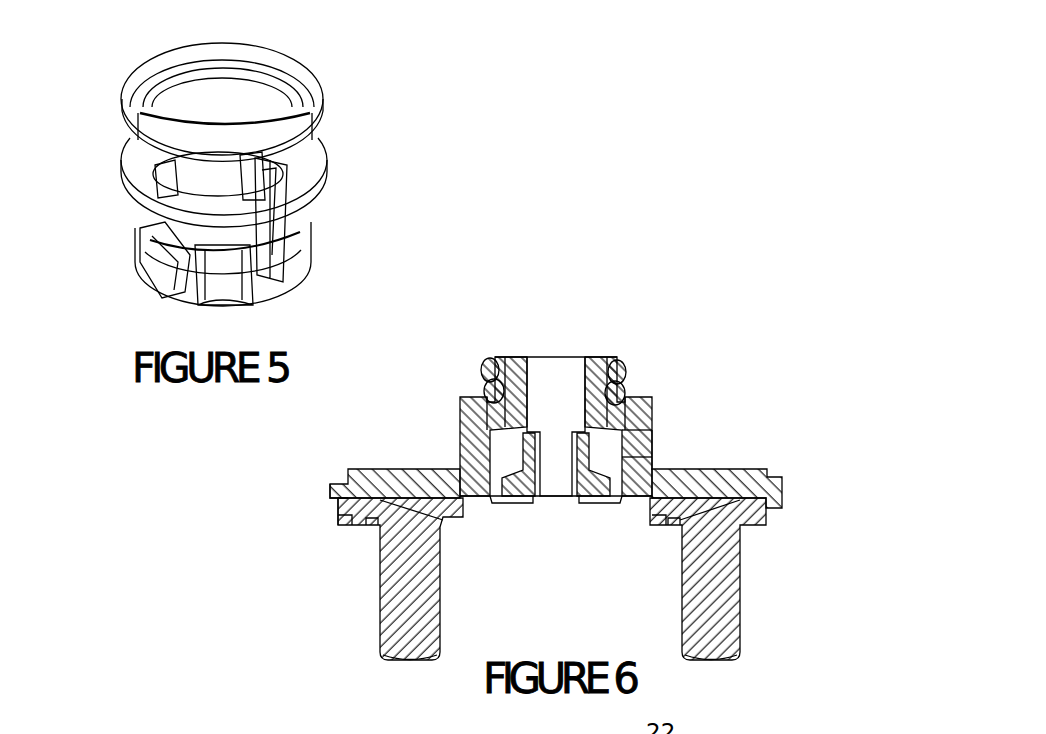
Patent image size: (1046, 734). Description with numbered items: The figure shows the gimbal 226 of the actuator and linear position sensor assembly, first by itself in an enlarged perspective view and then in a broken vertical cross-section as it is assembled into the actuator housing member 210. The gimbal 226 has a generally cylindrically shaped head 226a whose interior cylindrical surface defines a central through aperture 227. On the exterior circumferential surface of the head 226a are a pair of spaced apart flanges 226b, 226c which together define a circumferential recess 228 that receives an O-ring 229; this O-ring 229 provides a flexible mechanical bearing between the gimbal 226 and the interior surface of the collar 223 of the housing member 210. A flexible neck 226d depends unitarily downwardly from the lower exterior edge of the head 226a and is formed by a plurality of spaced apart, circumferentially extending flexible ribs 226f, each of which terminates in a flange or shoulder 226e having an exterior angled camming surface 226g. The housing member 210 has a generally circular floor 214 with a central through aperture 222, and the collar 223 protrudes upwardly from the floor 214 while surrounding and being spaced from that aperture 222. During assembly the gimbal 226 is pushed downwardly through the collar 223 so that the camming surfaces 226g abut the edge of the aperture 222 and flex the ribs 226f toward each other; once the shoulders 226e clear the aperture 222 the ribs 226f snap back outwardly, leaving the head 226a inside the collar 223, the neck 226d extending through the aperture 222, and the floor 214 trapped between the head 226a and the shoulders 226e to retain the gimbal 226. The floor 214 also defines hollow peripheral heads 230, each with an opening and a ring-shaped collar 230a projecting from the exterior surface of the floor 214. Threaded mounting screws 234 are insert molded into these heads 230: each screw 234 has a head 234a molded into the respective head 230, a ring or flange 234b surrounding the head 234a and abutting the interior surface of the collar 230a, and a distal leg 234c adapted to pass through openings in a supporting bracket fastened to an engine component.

In FIG. 6, the housing member 210 is at (340, 520).
In FIG. 6, the floor 214 is at (332, 483).
In FIG. 6, the central aperture 222 is at (583, 498).
In FIG. 6, the collar 223 is at (648, 433).
In FIG. 5, the gimbal 226 is at (388, 133).
In FIG. 6, the gimbal 226 is at (604, 351).
In FIG. 5, the head 226a is at (333, 112).
In FIG. 6, the head 226a is at (610, 368).
In FIG. 5, the flange 226b is at (202, 58).
In FIG. 6, the flange 226b is at (492, 366).
In FIG. 5, the flange 226c is at (140, 143).
In FIG. 6, the flange 226c is at (459, 404).
In FIG. 5, the flexible neck 226d is at (280, 197).
In FIG. 6, the flexible neck 226d is at (628, 410).
In FIG. 5, the shoulder 226e is at (317, 240).
In FIG. 6, the shoulder 226e is at (647, 453).
In FIG. 5, the flexible ribs 226f is at (210, 313).
In FIG. 6, the flexible ribs 226f is at (632, 424).
In FIG. 5, the exterior angled camming surface 226g is at (303, 260).
In FIG. 6, the exterior angled camming surface 226g is at (700, 468).
In FIG. 6, the central through aperture 227 is at (538, 378).
In FIG. 5, the circumferential recess 228 is at (157, 116).
In FIG. 6, the circumferential recess 228 is at (623, 382).
In FIG. 6, the O-ring 229 is at (624, 396).
In FIG. 6, the hollow peripheral heads 230 is at (782, 498).
In FIG. 6, the ring-shaped collar 230a is at (663, 523).
In FIG. 6, the mounting screws 234 is at (743, 575).
In FIG. 6, the screw head 234a is at (728, 510).
In FIG. 6, the flange 234b is at (672, 525).
In FIG. 6, the distal leg 234c is at (722, 630).